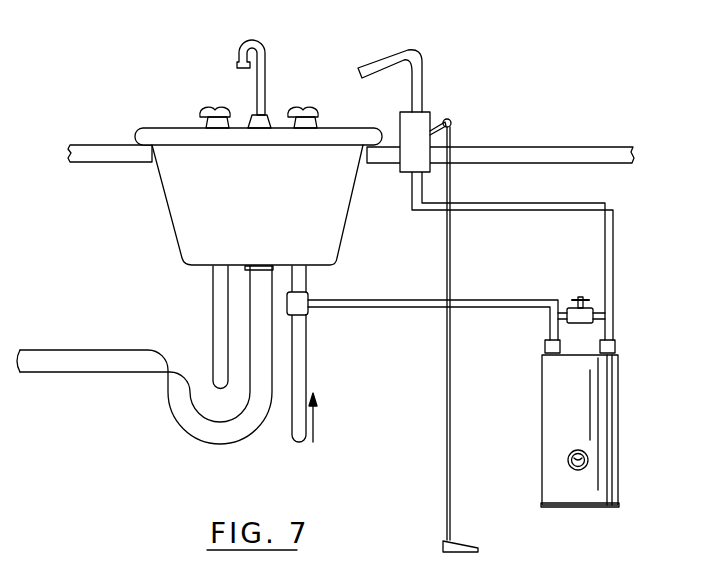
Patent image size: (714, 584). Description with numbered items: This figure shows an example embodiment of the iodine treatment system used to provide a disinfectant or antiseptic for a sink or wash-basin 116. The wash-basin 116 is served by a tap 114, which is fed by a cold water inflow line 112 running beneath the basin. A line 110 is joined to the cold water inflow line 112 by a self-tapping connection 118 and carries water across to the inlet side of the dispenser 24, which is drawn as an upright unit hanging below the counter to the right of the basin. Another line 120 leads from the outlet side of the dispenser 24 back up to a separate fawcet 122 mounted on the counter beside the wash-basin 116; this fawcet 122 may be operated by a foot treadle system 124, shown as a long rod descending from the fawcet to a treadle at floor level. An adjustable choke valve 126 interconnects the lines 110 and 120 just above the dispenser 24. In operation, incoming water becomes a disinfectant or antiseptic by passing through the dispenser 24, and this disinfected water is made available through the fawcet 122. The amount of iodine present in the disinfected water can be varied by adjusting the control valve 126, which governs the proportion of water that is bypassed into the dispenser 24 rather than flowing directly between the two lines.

The dispenser 24 is at (622, 432).
The line 110 is at (417, 299).
The cold water inflow line 112 is at (299, 379).
The tap 114 is at (236, 50).
The wash-basin 116 is at (181, 212).
The self-tapping connection 118 is at (303, 308).
The line 120 is at (612, 260).
The fawcet 122 is at (420, 125).
The foot treadle system 124 is at (445, 385).
The adjustable choke valve 126 is at (582, 296).